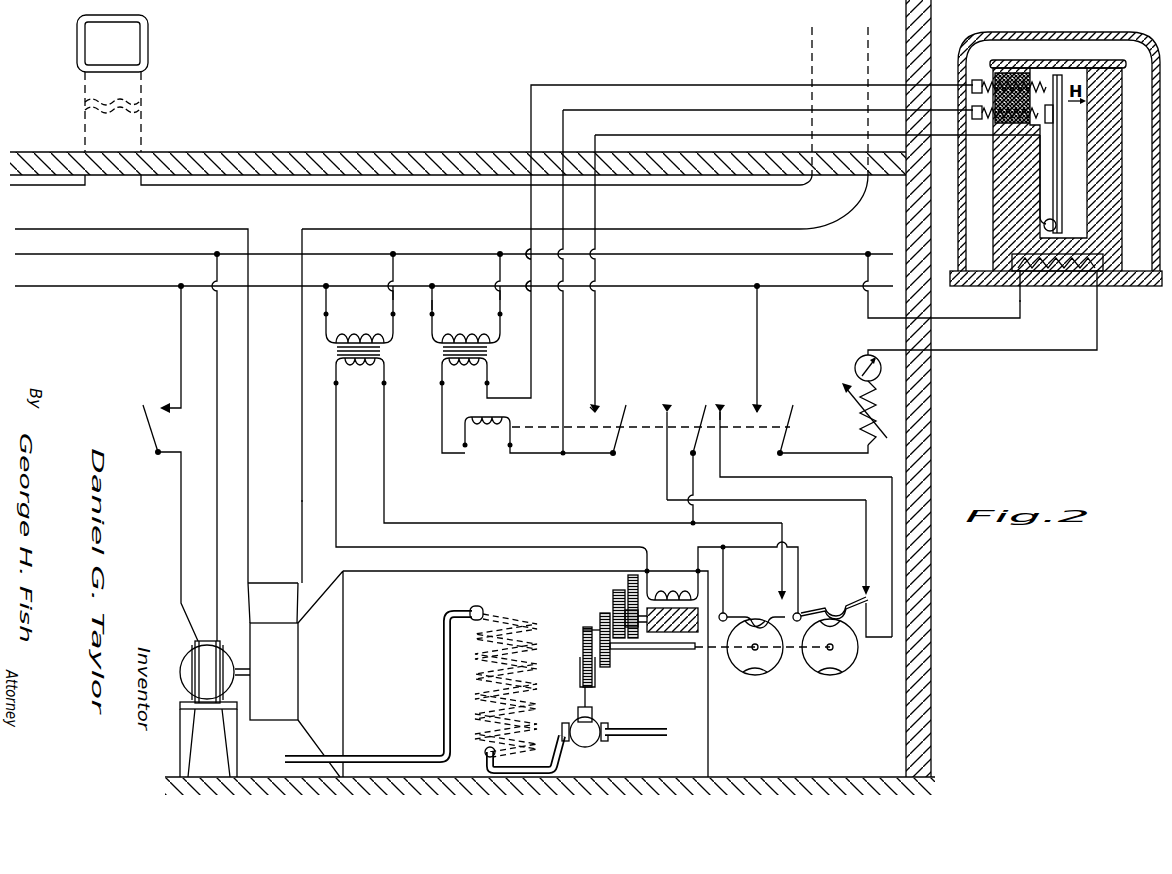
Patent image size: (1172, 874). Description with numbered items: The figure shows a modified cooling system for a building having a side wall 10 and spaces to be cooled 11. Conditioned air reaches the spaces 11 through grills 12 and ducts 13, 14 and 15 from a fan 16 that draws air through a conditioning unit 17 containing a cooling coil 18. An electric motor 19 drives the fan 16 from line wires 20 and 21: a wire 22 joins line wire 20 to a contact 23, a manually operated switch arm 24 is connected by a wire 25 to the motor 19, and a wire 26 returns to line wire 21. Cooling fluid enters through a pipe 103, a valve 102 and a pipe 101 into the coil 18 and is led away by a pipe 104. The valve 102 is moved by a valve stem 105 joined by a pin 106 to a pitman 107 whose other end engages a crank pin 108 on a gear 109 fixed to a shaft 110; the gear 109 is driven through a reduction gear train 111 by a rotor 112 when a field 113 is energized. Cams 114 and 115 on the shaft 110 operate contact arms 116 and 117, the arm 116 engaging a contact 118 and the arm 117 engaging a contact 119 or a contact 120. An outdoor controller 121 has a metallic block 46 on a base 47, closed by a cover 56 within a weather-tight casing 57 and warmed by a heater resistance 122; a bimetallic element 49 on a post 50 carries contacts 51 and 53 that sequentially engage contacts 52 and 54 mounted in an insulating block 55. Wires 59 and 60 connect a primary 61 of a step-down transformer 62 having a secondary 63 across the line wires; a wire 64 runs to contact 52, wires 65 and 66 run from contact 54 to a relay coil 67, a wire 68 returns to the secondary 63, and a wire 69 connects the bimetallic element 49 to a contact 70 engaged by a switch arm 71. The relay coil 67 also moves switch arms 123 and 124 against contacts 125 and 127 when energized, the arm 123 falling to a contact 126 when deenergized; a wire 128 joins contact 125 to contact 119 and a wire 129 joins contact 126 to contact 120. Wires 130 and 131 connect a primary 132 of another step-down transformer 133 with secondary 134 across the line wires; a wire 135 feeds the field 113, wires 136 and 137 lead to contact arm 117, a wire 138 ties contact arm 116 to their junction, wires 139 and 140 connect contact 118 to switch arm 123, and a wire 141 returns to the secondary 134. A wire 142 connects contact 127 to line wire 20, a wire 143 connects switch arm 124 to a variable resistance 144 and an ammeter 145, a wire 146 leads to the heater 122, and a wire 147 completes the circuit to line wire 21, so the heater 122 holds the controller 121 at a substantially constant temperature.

The side wall 10 is at (931, 406).
The spaces to be cooled 11 is at (414, 88).
The grills 12 is at (148, 48).
The duct 13 is at (143, 132).
The duct 14 is at (362, 226).
The duct 15 is at (293, 480).
The fan 16 is at (272, 716).
The conditioning unit 17 is at (358, 574).
The cooling coil 18 is at (506, 612).
The electric motor 19 is at (184, 660).
The line wire 20 is at (80, 290).
The line wire 21 is at (78, 258).
The wire 22 is at (181, 320).
The contact 23 is at (166, 402).
The switch arm 24 is at (148, 432).
The wire 25 is at (172, 518).
The wire 26 is at (216, 446).
The metallic block 46 is at (1108, 150).
The base 47 is at (1120, 288).
The bimetallic element 49 is at (1062, 176).
The post 50 is at (1078, 224).
The contact 51 is at (1055, 76).
The adjustable contact 52 is at (978, 80).
The contact 53 is at (1052, 118).
The adjustable contact 54 is at (976, 118).
The insulating block 55 is at (1005, 80).
The cover 56 is at (1100, 50).
The weather-tight casing 57 is at (1062, 34).
The wire 59 is at (432, 302).
The wire 60 is at (500, 274).
The primary 61 is at (466, 328).
The step-down transformer 62 is at (442, 352).
The secondary 63 is at (465, 374).
The wire 64 is at (531, 372).
The wire 65 is at (563, 342).
The wire 66 is at (540, 455).
The relay coil 67 is at (487, 433).
The wire 68 is at (442, 434).
The wire 69 is at (600, 325).
The contact 70 is at (606, 406).
The switch arm 71 is at (616, 450).
The pipe 101 is at (555, 758).
The valve 102 is at (597, 740).
The pipe 103 is at (630, 728).
The pipe 104 is at (443, 676).
The valve stem 105 is at (585, 702).
The pin 106 is at (580, 675).
The pitman 107 is at (583, 646).
The crank pin 108 is at (598, 614).
The gear 109 is at (610, 662).
The shaft 110 is at (660, 640).
The reduction gear train 111 is at (612, 602).
The rotor 112 is at (695, 655).
The field 113 is at (672, 580).
The cam 114 is at (760, 676).
The cam 115 is at (836, 672).
The contact arm 116 is at (740, 604).
The contact arm 117 is at (820, 596).
The contact 118 is at (780, 598).
The contact 119 is at (862, 590).
The contact 120 is at (866, 630).
The outdoor controller 121 is at (1000, 290).
The heater resistance 122 is at (1057, 282).
The switch arm 123 is at (702, 400).
The switch arm 124 is at (786, 434).
The contact 125 is at (684, 392).
The contact 126 is at (736, 398).
The contact 127 is at (762, 404).
The wire 128 is at (886, 568).
The wire 129 is at (752, 476).
The wire 130 is at (330, 302).
The wire 131 is at (392, 274).
The primary 132 is at (370, 324).
The step-down transformer 133 is at (332, 351).
The secondary 134 is at (360, 374).
The wire 135 is at (358, 482).
The wire 136 is at (698, 550).
The wire 137 is at (752, 548).
The wire 138 is at (742, 572).
The wire 139 is at (782, 520).
The wire 140 is at (690, 502).
The wire 141 is at (466, 522).
The wire 142 is at (762, 320).
The wire 143 is at (812, 450).
The variable resistance 144 is at (846, 400).
The ammeter 145 is at (856, 358).
The wire 146 is at (1012, 352).
The wire 147 is at (1022, 318).